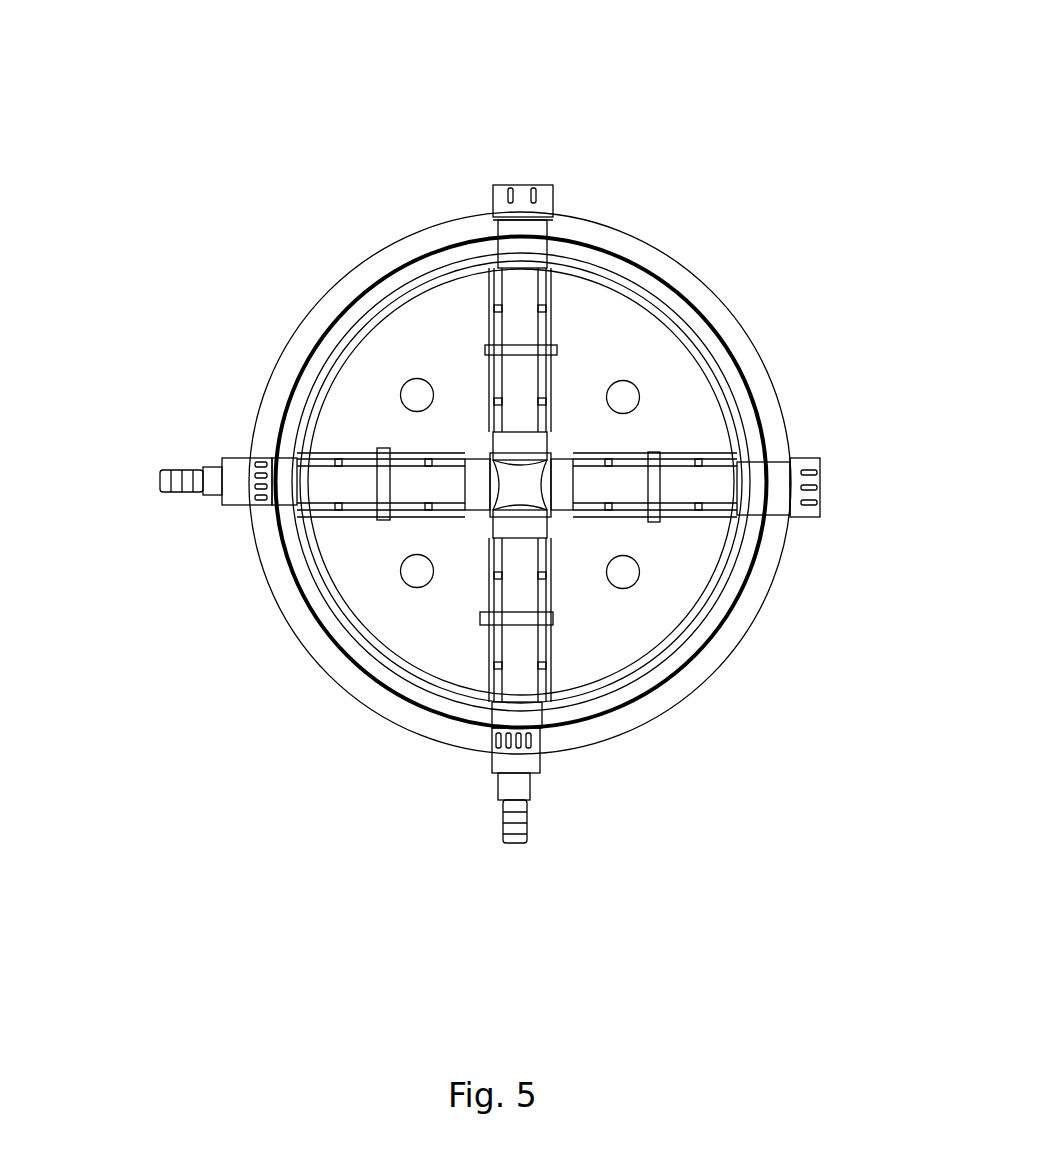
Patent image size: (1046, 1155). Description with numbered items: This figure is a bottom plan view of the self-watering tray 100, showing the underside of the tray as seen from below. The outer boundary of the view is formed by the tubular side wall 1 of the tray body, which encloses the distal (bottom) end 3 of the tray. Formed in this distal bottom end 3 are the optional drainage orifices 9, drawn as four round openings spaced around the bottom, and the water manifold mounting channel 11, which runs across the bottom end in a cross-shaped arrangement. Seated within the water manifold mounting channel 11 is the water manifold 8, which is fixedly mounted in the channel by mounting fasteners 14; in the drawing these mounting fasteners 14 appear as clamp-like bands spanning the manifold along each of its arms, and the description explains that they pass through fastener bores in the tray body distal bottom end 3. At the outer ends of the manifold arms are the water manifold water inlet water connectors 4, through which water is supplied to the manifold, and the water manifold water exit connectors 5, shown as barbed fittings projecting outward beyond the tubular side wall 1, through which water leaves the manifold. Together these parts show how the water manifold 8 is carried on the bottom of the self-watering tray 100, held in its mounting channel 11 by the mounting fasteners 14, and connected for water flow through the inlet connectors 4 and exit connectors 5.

The self-watering tray 100 is at (229, 113).
The tubular side wall 1 is at (413, 277).
The distal (bottom) end 3 is at (593, 315).
The water manifold water inlet water connector 4 is at (507, 208).
The water manifold water exit connector 5 is at (243, 490).
The water manifold 8 is at (337, 483).
The drainage orifices 9 is at (623, 398).
The water manifold mounting channel 11 is at (713, 458).
The mounting fastener 14 is at (487, 348).